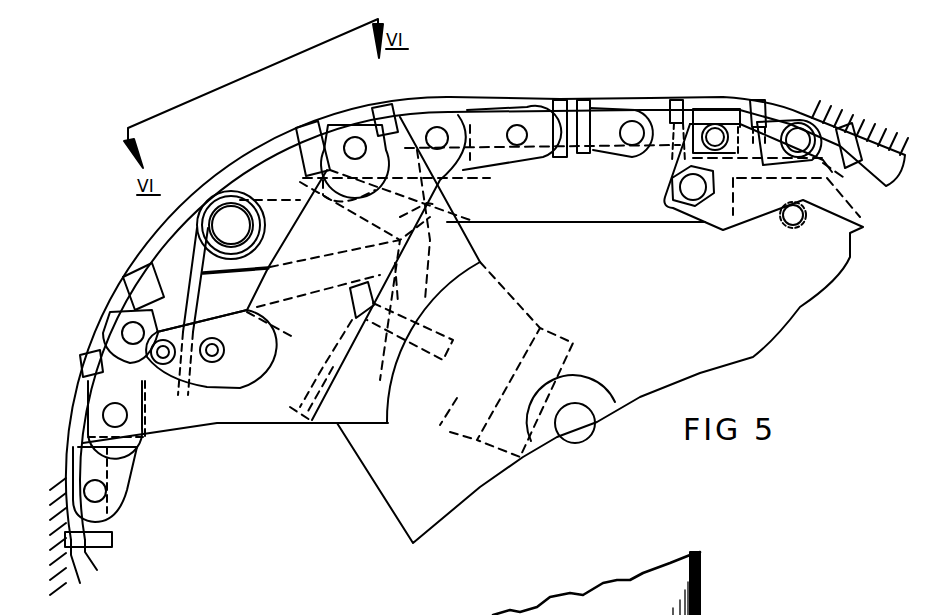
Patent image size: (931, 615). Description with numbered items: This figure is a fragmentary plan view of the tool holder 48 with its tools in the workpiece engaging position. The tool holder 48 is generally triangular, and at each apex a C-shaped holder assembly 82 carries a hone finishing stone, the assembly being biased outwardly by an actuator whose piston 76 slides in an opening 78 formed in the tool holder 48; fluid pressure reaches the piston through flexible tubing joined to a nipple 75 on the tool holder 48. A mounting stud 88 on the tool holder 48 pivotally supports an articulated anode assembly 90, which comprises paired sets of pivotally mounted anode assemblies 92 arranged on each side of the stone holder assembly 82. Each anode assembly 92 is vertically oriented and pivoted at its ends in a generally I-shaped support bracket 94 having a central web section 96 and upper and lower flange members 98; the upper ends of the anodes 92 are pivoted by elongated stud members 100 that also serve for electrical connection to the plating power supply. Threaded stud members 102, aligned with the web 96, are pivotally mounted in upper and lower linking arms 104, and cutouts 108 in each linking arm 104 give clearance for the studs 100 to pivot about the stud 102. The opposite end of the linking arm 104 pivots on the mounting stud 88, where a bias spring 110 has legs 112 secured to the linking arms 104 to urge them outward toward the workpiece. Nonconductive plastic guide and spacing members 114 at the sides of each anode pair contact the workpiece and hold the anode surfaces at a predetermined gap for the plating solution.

The tool holder 48 is at (688, 276).
The nipple 75 is at (583, 420).
The piston 76 is at (450, 407).
The opening 78 is at (560, 337).
The holder assembly 82 is at (160, 210).
The mounting stud 88 is at (243, 238).
The articulated anode assembly 90 is at (447, 84).
The anode assembly 92 is at (550, 110).
The support bracket 94 is at (150, 487).
The central web section 96 is at (420, 117).
The flange member 98 is at (113, 510).
The elongated stud member 100 is at (353, 139).
The threaded stud member 102 is at (437, 126).
The linking arm 104 is at (207, 425).
The cutout 108 is at (327, 170).
The bias spring 110 is at (218, 214).
The leg 112 is at (195, 299).
The guide and spacing member 114 is at (302, 165).